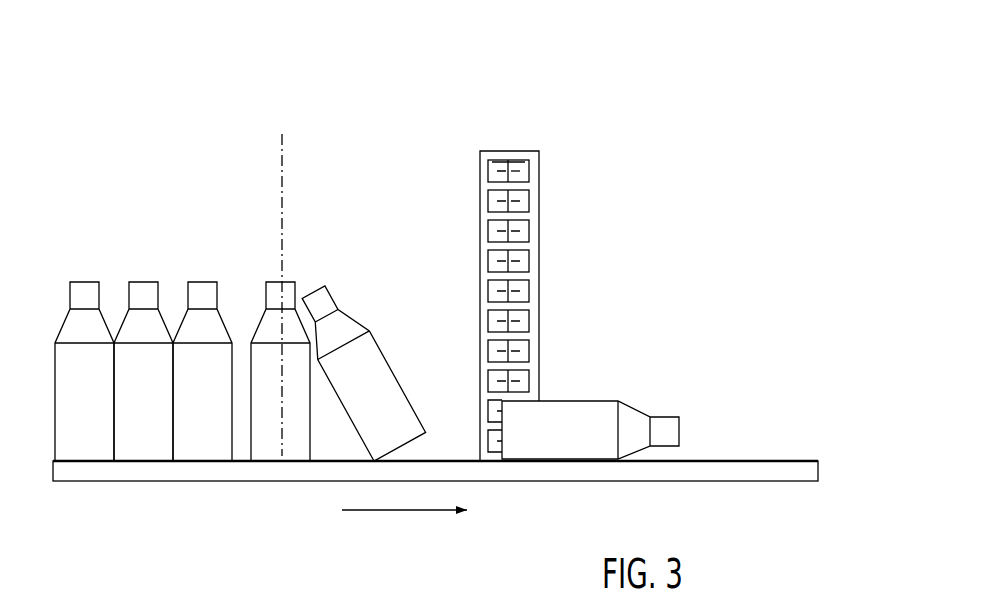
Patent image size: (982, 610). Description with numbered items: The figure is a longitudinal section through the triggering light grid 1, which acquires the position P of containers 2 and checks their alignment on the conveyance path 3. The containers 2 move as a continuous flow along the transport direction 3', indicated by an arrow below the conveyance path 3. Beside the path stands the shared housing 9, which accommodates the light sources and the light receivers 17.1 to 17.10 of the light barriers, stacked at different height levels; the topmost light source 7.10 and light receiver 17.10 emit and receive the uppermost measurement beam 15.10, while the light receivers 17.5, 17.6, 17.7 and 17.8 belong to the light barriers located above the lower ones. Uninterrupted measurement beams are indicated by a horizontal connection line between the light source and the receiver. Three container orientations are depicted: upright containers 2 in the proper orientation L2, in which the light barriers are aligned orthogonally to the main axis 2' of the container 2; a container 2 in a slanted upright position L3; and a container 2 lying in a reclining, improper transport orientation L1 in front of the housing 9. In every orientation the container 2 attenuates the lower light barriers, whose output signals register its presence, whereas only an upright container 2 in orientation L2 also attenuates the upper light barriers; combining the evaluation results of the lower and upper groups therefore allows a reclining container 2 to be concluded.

The triggering light grid 1 is at (363, 143).
The container 2 is at (84, 345).
The main axis 2' is at (284, 333).
The conveyance path 3 is at (435, 495).
The transport direction 3' is at (404, 534).
The light source 7.10 is at (528, 178).
The housing 9 is at (505, 281).
The measurement beam 15.10 is at (498, 170).
The light receiver 17.1 is at (492, 444).
The light receiver 17.5 is at (492, 320).
The light receiver 17.6 is at (492, 290).
The light receiver 17.7 is at (492, 260).
The light receiver 17.8 is at (492, 230).
The light receiver 17.10 is at (505, 142).
The reclining transport orientation L1 is at (639, 396).
The proper orientation L2 is at (143, 333).
The slanted upright position L3 is at (345, 296).
The position P is at (279, 131).